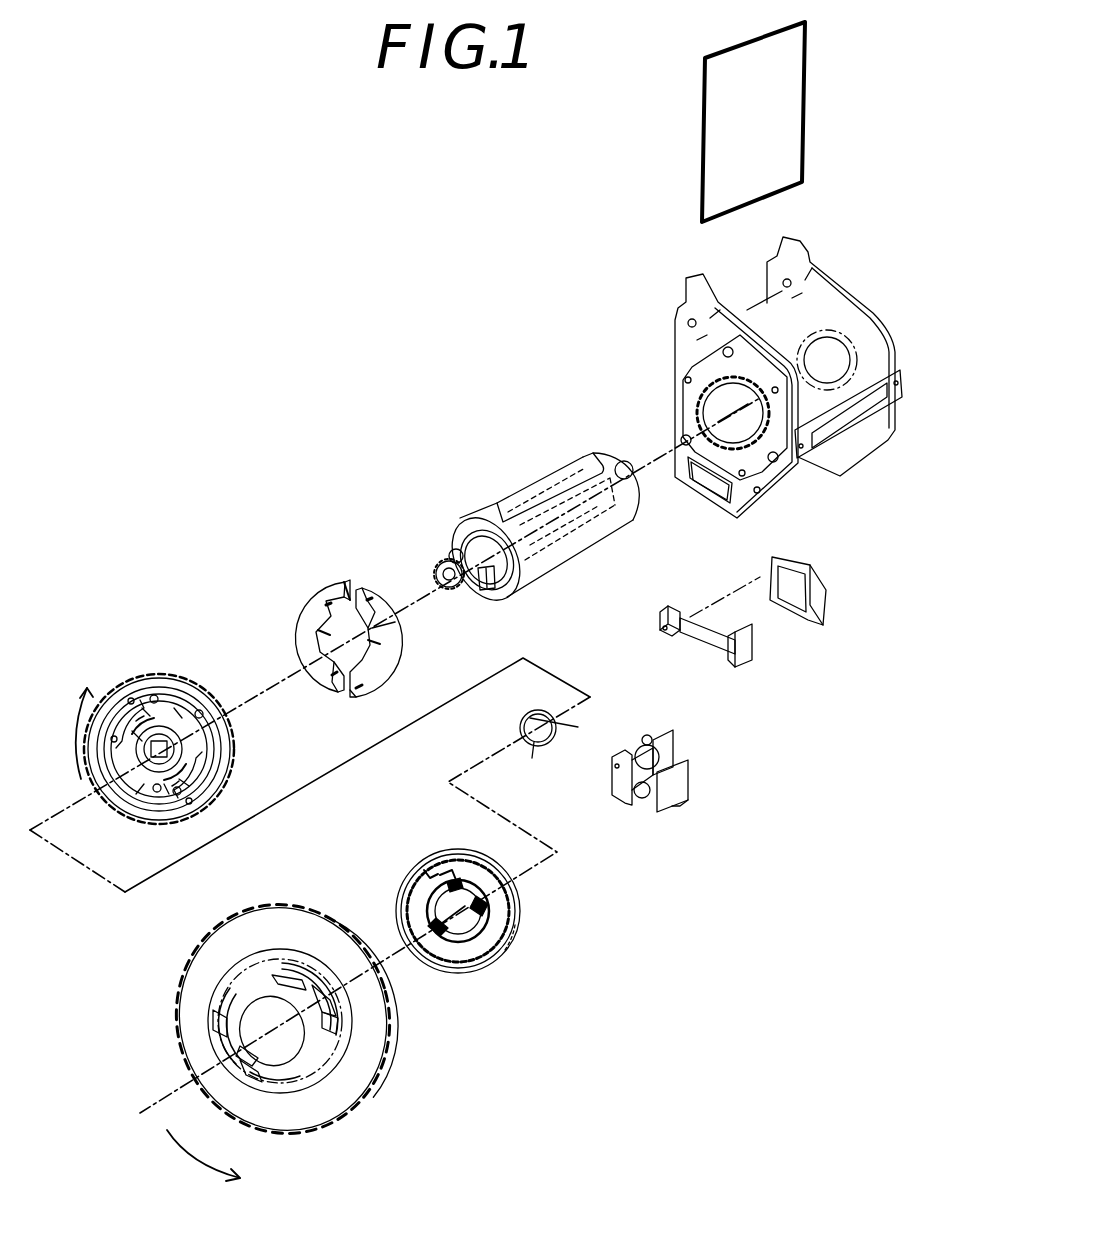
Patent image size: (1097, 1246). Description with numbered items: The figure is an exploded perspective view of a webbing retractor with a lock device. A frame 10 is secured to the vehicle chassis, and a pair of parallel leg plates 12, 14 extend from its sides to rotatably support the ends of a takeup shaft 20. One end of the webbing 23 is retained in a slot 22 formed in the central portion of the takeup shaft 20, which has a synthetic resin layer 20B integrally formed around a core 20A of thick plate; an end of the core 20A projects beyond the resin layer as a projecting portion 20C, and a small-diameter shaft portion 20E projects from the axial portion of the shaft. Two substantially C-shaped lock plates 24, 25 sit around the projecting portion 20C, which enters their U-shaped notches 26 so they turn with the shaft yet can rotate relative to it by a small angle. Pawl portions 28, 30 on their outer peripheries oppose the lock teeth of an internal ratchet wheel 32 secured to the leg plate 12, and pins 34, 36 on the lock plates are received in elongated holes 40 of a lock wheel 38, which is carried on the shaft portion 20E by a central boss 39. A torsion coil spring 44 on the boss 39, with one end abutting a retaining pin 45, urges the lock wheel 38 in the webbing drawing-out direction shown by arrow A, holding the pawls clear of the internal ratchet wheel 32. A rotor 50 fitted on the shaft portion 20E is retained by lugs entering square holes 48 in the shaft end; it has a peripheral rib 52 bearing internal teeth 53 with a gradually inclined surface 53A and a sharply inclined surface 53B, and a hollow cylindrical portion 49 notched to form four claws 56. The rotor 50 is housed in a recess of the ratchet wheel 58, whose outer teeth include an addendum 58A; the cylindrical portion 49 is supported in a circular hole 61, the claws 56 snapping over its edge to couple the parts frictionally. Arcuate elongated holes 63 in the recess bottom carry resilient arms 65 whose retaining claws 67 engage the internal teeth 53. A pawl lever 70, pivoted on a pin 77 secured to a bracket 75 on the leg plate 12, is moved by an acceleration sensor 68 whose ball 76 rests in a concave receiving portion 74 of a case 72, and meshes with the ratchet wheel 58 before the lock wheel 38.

The frame 10 is at (763, 380).
The leg plate 12 is at (775, 480).
The leg plate 14 is at (858, 447).
The takeup shaft 20 is at (517, 542).
The core 20A is at (585, 535).
The synthetic resin layer 20B is at (555, 482).
The projecting portion 20C is at (492, 590).
The small-diameter shaft portion 20E is at (468, 590).
The slot 22 is at (492, 505).
The webbing 23 is at (710, 130).
The lock plate 24 is at (339, 630).
The lock plate 25 is at (398, 627).
The notch 26 is at (300, 628).
The pawl portion 28 is at (342, 582).
The pawl portion 30 is at (393, 638).
The internal ratchet wheel 32 is at (692, 395).
The pin 34 is at (330, 602).
The pin 36 is at (372, 588).
The lock wheel 38 is at (179, 743).
The boss 39 is at (172, 748).
The elongated hole 40 is at (153, 696).
The torsion coil spring 44 is at (548, 708).
The retaining pin 45 is at (149, 768).
The square hole 48 is at (455, 552).
The hollow cylindrical portion 49 is at (478, 898).
The rotor 50 is at (444, 912).
The rib 52 is at (512, 934).
The internal teeth 53 is at (356, 828).
The gradually inclined surface 53A is at (430, 868).
The sharply inclined surface 53B is at (420, 878).
The claw 56 is at (460, 886).
The ratchet wheel 58 is at (298, 1027).
The addendum 58A is at (392, 1085).
The circular hole 61 is at (285, 1075).
The elongated hole 63 is at (335, 1015).
The arm 65 is at (290, 975).
The retaining claw 67 is at (215, 1025).
The acceleration sensor 68 is at (653, 770).
The pawl lever 70 is at (740, 662).
The case 72 is at (660, 742).
The concave receiving portion 74 is at (642, 798).
The bracket 75 is at (805, 625).
The ball 76 is at (625, 752).
The pin 77 is at (755, 580).
The webbing drawing-out direction A is at (72, 738).